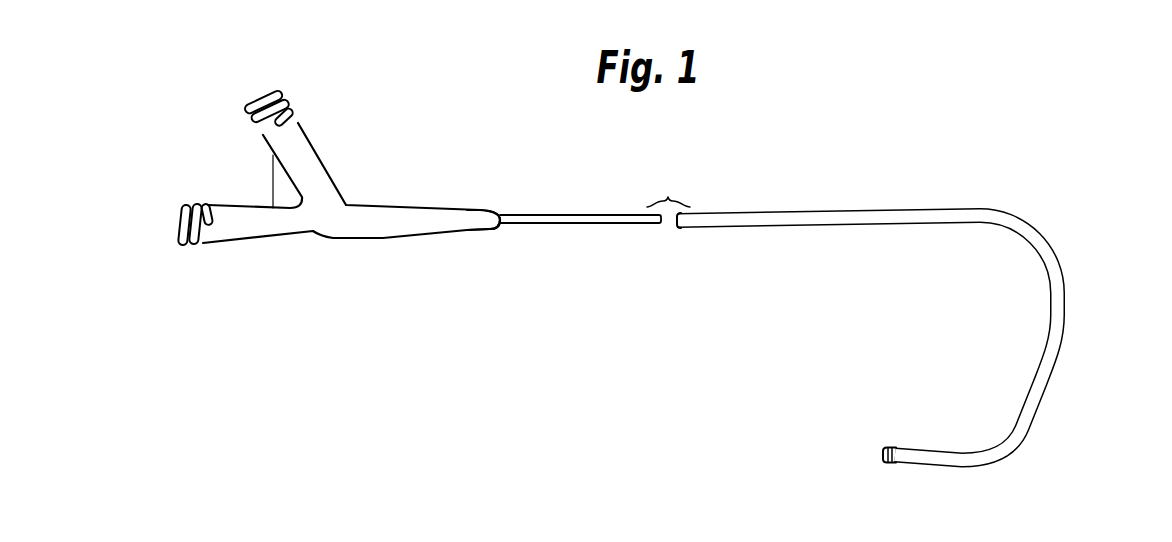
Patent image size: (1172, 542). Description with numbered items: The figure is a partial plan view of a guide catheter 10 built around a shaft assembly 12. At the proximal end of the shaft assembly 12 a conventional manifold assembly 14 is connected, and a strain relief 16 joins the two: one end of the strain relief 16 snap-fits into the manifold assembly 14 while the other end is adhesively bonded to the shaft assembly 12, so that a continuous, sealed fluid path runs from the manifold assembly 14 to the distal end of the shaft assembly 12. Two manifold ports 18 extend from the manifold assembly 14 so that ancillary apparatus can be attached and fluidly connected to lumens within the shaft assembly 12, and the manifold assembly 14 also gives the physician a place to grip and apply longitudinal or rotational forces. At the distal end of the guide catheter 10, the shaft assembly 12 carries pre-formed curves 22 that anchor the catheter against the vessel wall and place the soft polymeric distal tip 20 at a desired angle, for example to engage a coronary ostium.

The guide catheter 10 is at (623, 278).
The shaft assembly 12 is at (556, 203).
The manifold assembly 14 is at (277, 257).
The strain relief 16 is at (460, 232).
The manifold port 18 is at (286, 98).
The distal tip 20 is at (887, 462).
The curve 22 is at (1043, 245).